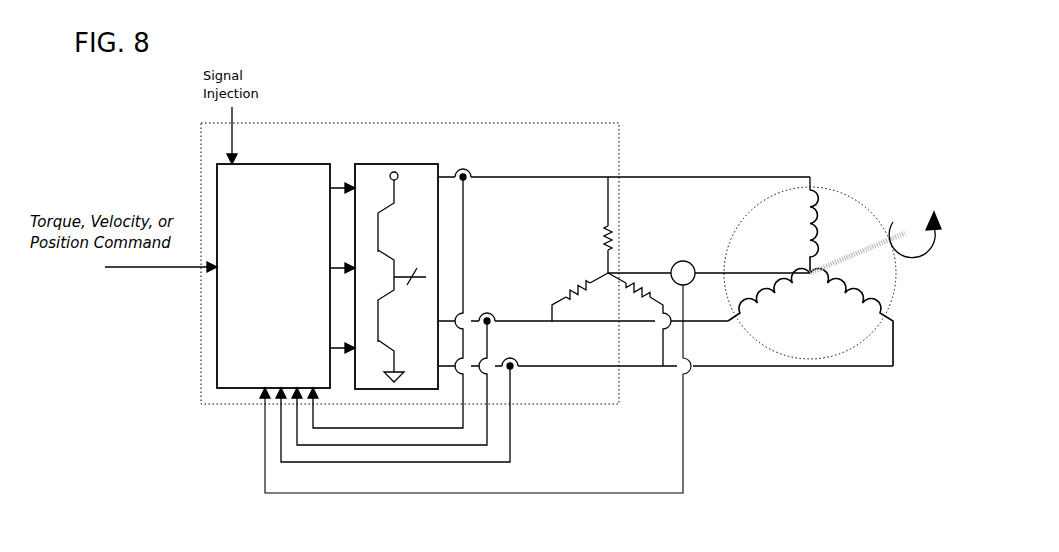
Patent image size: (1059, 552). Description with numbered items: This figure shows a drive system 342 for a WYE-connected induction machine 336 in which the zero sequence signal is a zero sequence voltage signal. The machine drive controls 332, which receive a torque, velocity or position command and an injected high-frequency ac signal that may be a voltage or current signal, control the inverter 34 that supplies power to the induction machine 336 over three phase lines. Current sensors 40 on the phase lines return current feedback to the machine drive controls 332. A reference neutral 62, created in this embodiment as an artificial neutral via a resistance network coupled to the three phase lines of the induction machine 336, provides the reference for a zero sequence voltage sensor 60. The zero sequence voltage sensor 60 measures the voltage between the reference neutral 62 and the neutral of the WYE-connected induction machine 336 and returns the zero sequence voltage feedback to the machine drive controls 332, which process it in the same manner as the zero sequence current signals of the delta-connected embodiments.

The machine drive controls 332 is at (277, 205).
The inverter 34 is at (395, 238).
The drive system 342 is at (535, 163).
The current sensors 40 is at (490, 314).
The reference neutral 62 is at (570, 257).
The zero sequence voltage sensor 60 is at (683, 261).
The induction machine 336 is at (825, 190).